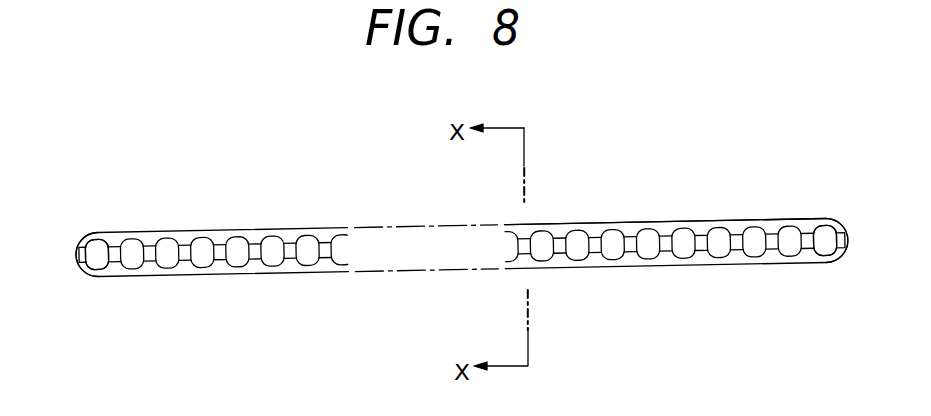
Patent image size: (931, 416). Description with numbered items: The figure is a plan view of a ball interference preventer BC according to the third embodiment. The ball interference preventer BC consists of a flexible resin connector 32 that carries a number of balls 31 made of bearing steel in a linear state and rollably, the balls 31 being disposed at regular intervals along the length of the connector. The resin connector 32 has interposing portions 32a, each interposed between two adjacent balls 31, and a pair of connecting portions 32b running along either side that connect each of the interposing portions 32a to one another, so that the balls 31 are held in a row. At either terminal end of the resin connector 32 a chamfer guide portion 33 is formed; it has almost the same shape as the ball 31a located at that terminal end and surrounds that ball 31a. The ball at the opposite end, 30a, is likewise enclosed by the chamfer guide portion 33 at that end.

The balls 31 is at (275, 262).
The first light emitting element 30a is at (97, 243).
The ball located at the terminal end 31a is at (826, 232).
The flexible resin connector 32 is at (462, 230).
The interposing portions 32a is at (326, 243).
The connecting portions 32b is at (252, 240).
The chamfer guide portion 33 is at (84, 238).
The ball interference preventer BC is at (582, 204).